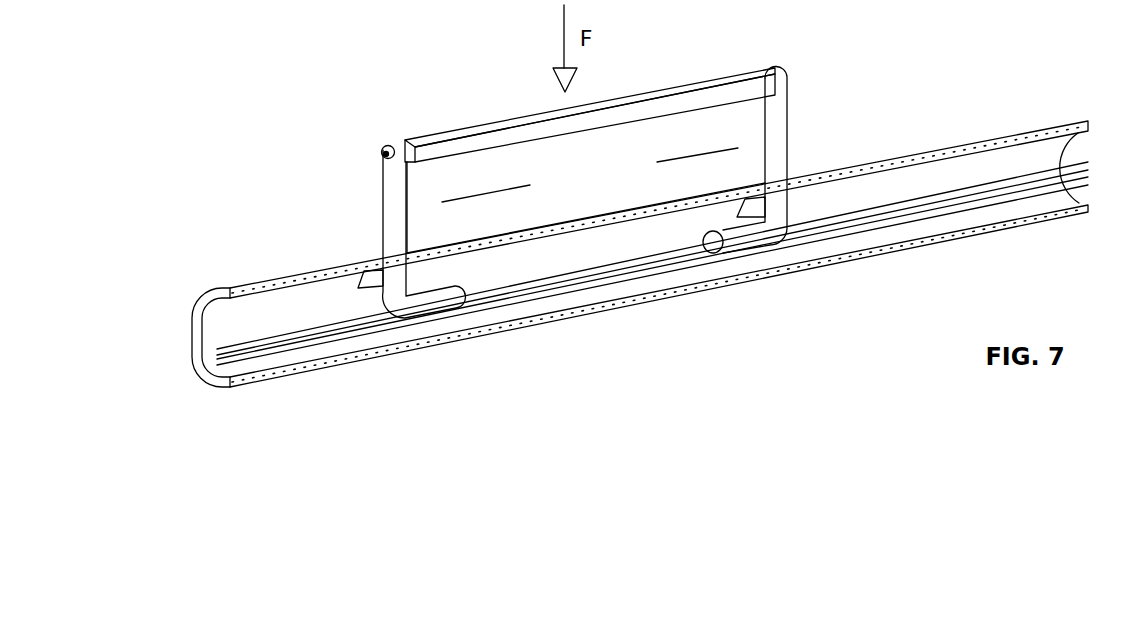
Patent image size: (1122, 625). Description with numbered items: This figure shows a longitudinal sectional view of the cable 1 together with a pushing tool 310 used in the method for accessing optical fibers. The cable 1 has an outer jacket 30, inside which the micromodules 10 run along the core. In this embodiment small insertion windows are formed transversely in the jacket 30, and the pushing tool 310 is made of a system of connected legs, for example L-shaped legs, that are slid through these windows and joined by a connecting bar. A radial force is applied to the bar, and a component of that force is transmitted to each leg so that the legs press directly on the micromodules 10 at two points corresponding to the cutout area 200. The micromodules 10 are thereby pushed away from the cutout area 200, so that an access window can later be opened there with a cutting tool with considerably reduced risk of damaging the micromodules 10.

The cable 1 is at (584, 288).
The micromodules 10 is at (269, 352).
The jacket 30 is at (312, 370).
The cutout area 200 is at (566, 178).
The pushing tool 310 is at (795, 162).